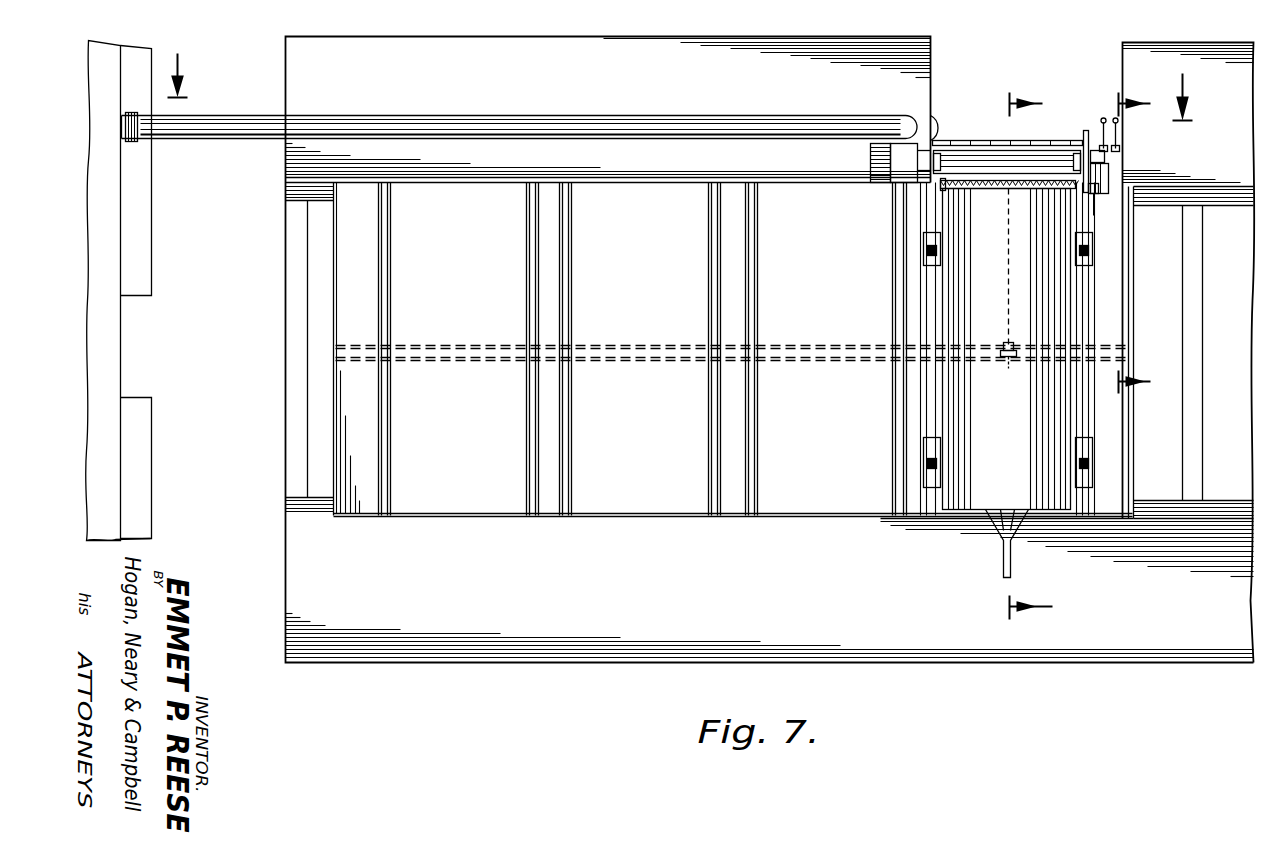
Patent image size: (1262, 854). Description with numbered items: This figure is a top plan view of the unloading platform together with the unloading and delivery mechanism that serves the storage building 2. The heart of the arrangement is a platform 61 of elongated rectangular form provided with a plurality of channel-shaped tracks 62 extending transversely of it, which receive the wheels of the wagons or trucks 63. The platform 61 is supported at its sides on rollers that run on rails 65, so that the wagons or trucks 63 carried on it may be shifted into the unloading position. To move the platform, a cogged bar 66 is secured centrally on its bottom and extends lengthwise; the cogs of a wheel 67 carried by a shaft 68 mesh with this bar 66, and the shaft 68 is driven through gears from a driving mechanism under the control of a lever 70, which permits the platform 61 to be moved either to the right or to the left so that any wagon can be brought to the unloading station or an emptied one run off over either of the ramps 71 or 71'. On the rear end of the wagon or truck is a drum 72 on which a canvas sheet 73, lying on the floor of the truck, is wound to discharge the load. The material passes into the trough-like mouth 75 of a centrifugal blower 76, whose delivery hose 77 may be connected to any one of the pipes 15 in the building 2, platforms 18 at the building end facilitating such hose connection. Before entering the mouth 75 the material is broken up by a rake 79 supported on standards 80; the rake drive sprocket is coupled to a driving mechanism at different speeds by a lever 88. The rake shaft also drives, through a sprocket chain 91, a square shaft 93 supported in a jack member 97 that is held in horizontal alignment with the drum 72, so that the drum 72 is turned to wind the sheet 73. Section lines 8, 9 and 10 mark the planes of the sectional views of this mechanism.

The building 2 is at (118, 372).
The section line 8- 8 is at (680, 97).
The section line 9- 9 is at (1021, 356).
The section line 10- 10 is at (1121, 243).
The pipe 15 is at (125, 113).
The platform 18 is at (151, 265).
The platform 61 is at (1133, 288).
The tracks 62 is at (557, 272).
The wagons or trucks 63 is at (978, 492).
The rails 65 is at (1224, 206).
The bar 66 is at (1112, 345).
The wheel 67 is at (1008, 365).
The shaft 68 is at (1007, 275).
The lever 70 is at (1118, 129).
The ramp 71 is at (770, 370).
The ramp 71' is at (1085, 353).
The drum 72 is at (944, 183).
The canvas sheet 73 is at (1025, 185).
The trough-like mouth 75 is at (950, 140).
The centrifugal blower 76 is at (870, 156).
The delivery hose 77 is at (540, 122).
The rake 79 is at (980, 150).
The standards 80 is at (937, 127).
The lever 88 is at (1100, 122).
The sprocket chain 91 is at (1110, 168).
The square shaft 93 is at (1090, 195).
The jack member 97 is at (1104, 156).